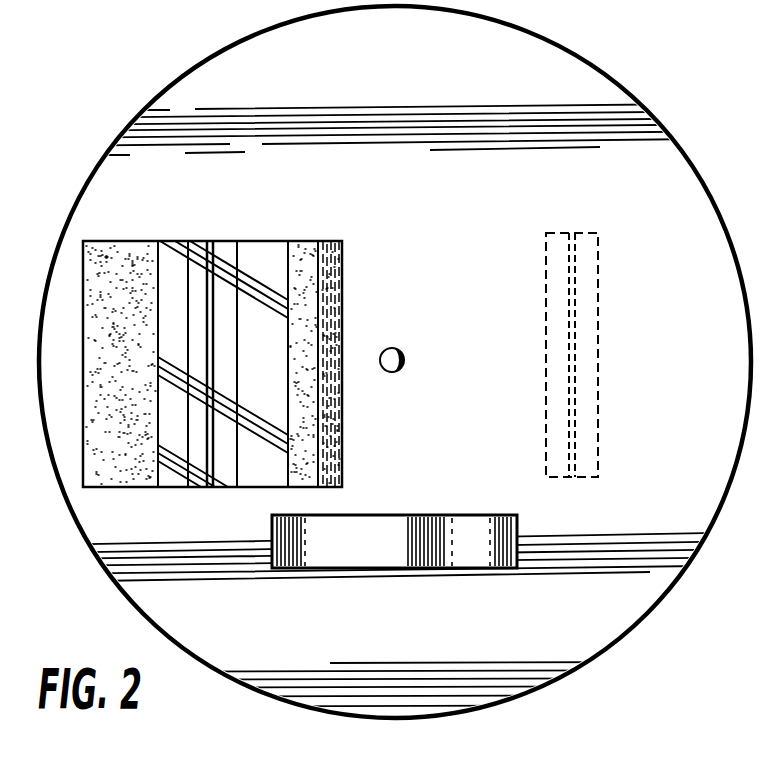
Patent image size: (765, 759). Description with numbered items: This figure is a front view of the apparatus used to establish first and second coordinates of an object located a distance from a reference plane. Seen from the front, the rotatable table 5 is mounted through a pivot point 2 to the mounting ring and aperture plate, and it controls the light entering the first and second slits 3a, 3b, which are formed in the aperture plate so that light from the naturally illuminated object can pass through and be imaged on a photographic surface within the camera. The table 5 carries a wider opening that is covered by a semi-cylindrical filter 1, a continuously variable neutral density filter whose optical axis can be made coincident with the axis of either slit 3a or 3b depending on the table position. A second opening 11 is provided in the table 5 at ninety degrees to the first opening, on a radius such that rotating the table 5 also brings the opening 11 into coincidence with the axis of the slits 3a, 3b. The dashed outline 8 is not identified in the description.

The semi-cylindrical filter 1 is at (319, 243).
The pivot point 2 is at (404, 359).
The first slit 3a is at (208, 250).
The second slit 3b is at (571, 245).
The table 5 is at (628, 92).
The reticle frame (dashed) 8 is at (598, 302).
The second opening 11 is at (469, 516).